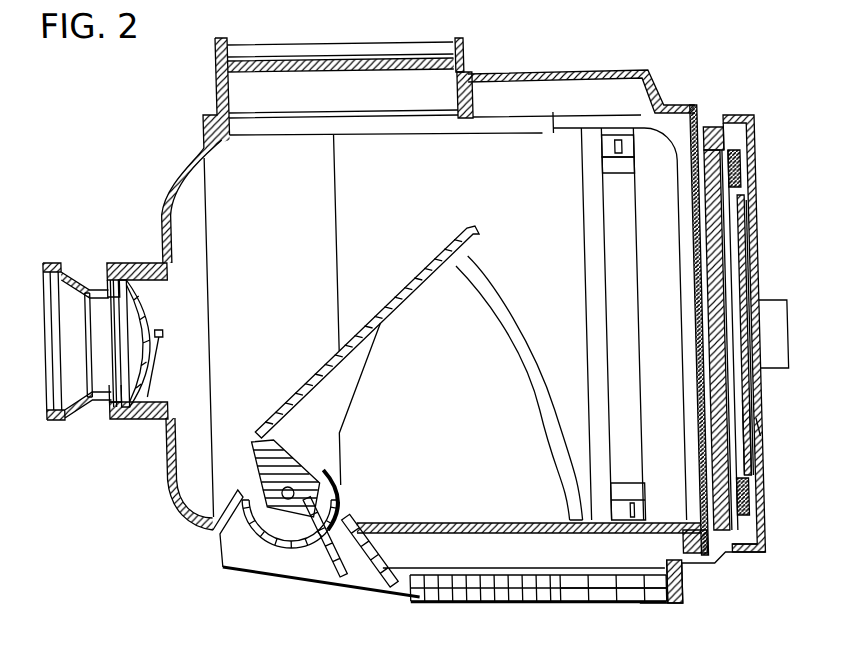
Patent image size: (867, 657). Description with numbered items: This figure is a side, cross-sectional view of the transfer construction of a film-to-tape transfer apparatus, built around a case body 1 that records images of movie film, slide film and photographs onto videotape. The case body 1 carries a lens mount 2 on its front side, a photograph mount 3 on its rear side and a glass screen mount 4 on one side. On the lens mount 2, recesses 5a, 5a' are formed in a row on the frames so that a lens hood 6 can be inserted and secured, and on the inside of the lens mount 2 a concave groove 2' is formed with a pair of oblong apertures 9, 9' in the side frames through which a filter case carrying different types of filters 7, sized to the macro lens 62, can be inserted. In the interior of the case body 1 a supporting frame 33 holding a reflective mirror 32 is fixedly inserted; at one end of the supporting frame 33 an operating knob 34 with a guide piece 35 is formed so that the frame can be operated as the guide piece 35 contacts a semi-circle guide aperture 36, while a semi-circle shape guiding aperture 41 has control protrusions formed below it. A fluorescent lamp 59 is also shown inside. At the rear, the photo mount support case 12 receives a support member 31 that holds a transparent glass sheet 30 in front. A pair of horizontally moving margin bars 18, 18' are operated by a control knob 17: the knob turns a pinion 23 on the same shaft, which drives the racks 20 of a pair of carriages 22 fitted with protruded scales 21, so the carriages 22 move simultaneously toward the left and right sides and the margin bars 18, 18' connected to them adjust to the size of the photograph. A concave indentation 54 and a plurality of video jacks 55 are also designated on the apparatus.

The case body 1 is at (570, 72).
The lens mount 2 is at (106, 318).
The concave groove 2' is at (107, 408).
The photograph mount 3 is at (739, 105).
The glass screen mount 4 is at (400, 42).
The recess 5a is at (504, 585).
The recess 5a' is at (584, 622).
The lens hood 6 is at (42, 420).
The filter 7 is at (681, 604).
The oblong aperture 9 is at (182, 492).
The oblong aperture 9' is at (174, 201).
The photo mount support case 12 is at (751, 553).
The control knob 17 is at (779, 323).
The margin bar 18 is at (774, 316).
The margin bar 18' is at (777, 437).
The rack 20 is at (751, 243).
The protruded scale 21 is at (746, 157).
The carriage 22 is at (726, 157).
The pinion 23 is at (749, 297).
The transparent glass sheet 30 is at (754, 427).
The support member 31 is at (712, 117).
The reflective mirror 32 is at (406, 278).
The supporting frame 33 is at (256, 440).
The operating knob 34 is at (310, 573).
The guide piece 35 is at (226, 545).
The semi-circle guide aperture 36 is at (231, 548).
The semi-circle shape guiding aperture 41 is at (485, 280).
The concave indentation 54 is at (259, 553).
The video jacks 55 is at (514, 606).
The fluorescent lamp 59 is at (633, 180).
The macro lens 62 is at (124, 360).